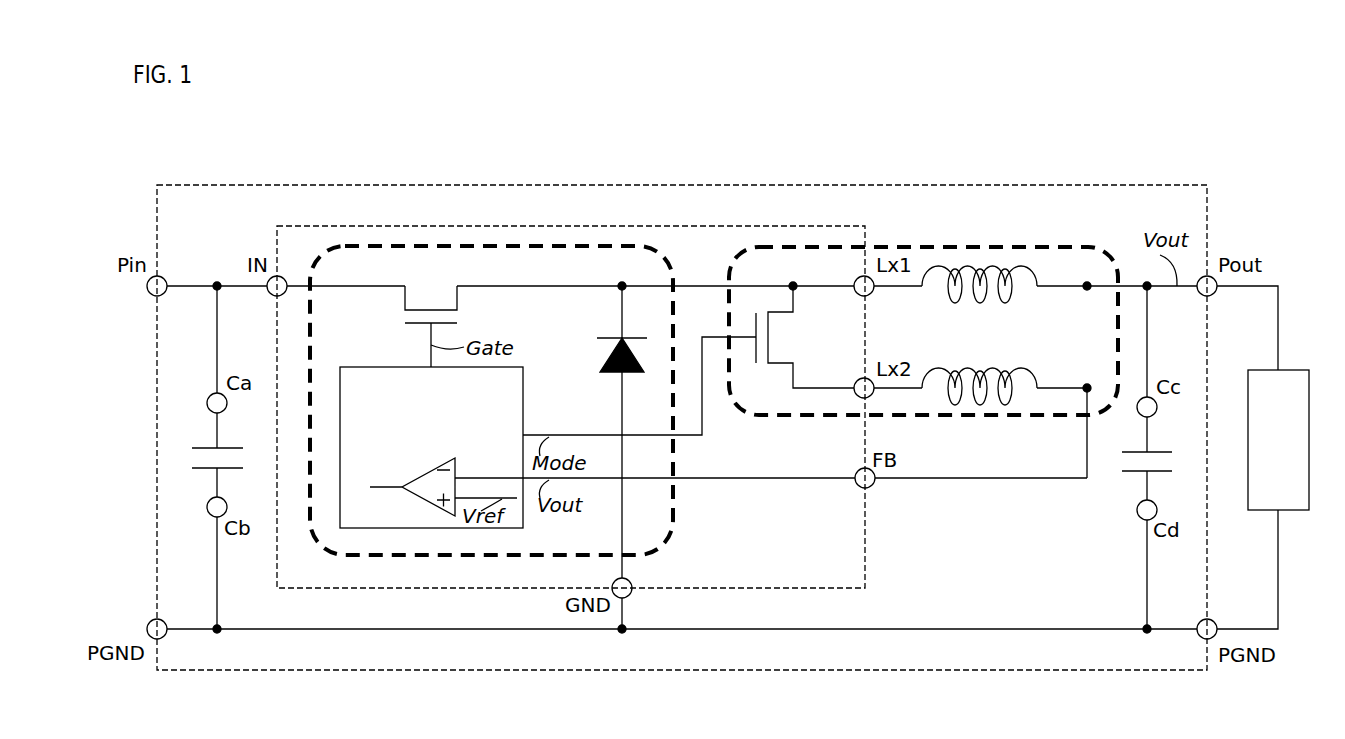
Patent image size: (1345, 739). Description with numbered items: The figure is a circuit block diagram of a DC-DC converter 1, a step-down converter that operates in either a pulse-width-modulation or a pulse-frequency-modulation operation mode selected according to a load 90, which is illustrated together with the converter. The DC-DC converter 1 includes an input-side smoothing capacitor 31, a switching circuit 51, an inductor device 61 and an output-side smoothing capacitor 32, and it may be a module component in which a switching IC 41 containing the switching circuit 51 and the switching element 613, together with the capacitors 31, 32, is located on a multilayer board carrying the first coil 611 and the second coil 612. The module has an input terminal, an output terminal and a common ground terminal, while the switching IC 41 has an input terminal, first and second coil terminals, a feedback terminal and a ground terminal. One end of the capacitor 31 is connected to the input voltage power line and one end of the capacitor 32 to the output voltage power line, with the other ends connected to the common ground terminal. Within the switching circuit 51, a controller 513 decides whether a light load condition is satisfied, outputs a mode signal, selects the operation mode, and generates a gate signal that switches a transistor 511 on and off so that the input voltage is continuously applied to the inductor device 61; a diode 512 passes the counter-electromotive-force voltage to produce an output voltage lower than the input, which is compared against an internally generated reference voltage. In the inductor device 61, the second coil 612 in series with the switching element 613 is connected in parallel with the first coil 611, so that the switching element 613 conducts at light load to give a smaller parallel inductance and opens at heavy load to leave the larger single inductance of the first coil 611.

The DC-DC converter 1 is at (855, 185).
The switching IC 41 is at (866, 575).
The switching circuit 51 is at (540, 246).
The transistor 511 is at (430, 307).
The diode 512 is at (598, 338).
The controller 513 is at (523, 405).
The inductor device 61 is at (1053, 247).
The first coil 611 is at (1057, 273).
The second coil 612 is at (1057, 375).
The switching element 613 is at (770, 348).
The input-side smoothing capacitor 31 is at (205, 470).
The output-side smoothing capacitor 32 is at (1138, 472).
The load 90 is at (1285, 370).